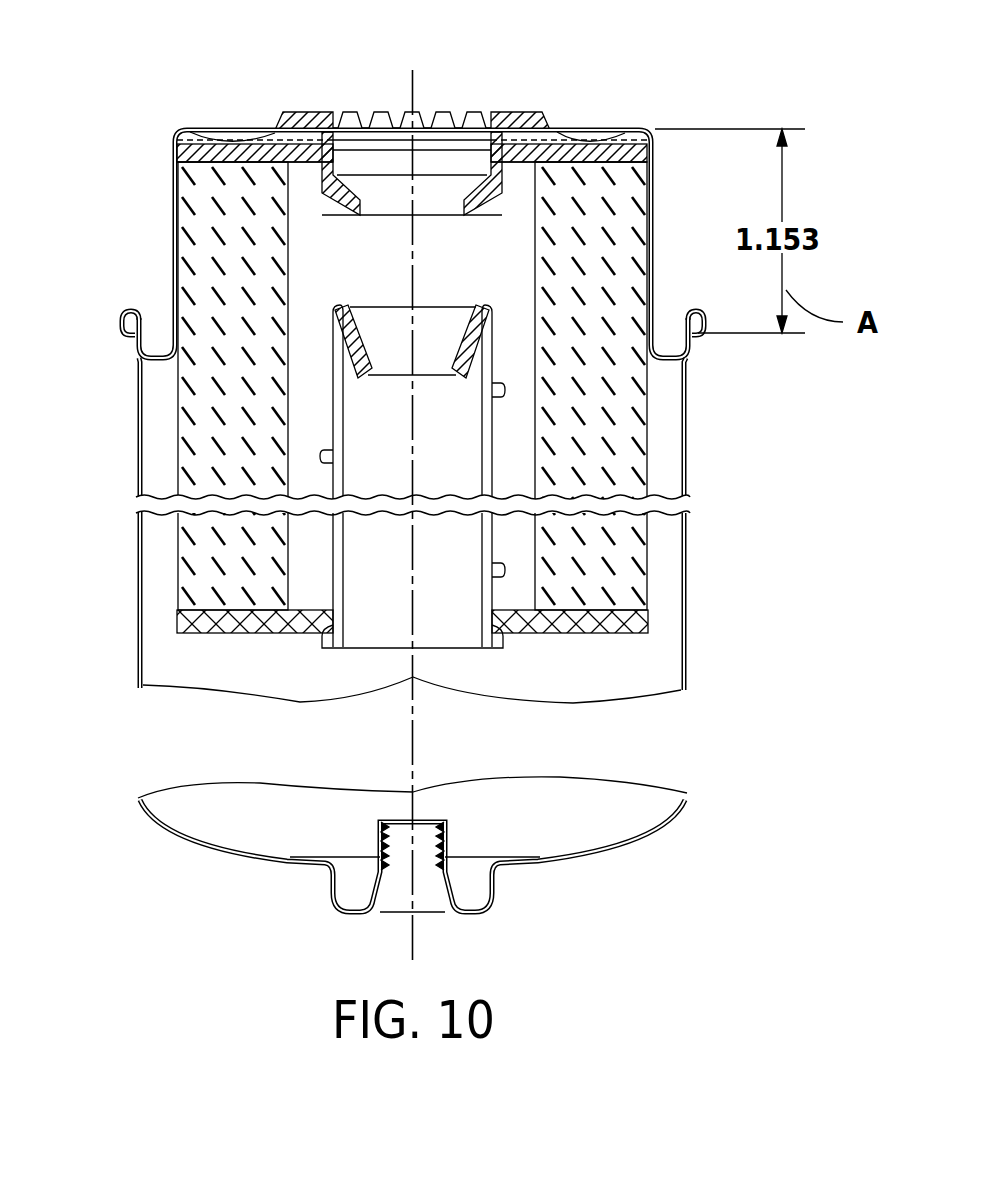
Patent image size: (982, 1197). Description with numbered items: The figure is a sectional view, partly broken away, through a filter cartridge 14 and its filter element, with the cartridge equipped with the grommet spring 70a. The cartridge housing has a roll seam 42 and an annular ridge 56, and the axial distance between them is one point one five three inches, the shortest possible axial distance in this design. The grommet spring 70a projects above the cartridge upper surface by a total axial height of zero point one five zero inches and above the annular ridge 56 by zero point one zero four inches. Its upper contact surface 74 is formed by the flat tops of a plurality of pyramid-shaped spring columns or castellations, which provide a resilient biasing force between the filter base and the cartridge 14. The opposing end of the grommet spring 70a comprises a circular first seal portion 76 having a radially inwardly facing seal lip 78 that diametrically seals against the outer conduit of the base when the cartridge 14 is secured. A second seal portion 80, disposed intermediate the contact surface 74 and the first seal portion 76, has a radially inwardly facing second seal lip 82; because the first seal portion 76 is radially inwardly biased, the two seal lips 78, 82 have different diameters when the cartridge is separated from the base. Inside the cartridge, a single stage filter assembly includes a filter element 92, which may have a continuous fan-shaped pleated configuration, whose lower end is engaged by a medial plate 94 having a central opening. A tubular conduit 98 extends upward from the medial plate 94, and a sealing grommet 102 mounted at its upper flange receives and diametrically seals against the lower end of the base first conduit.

The filter cartridge 14 is at (128, 443).
The roll seam 42 is at (702, 331).
The annular ridge 56 is at (630, 127).
The grommet spring 70a is at (270, 115).
The contact surface 74 is at (465, 113).
The first seal portion 76 is at (326, 216).
The seal lip 78 is at (362, 216).
The second seal portion 80 is at (496, 143).
The second seal lip 82 is at (458, 216).
The filter element 92 is at (253, 400).
The medial plate 94 is at (567, 634).
The tubular conduit 98 is at (480, 602).
The sealing grommet 102 is at (463, 366).